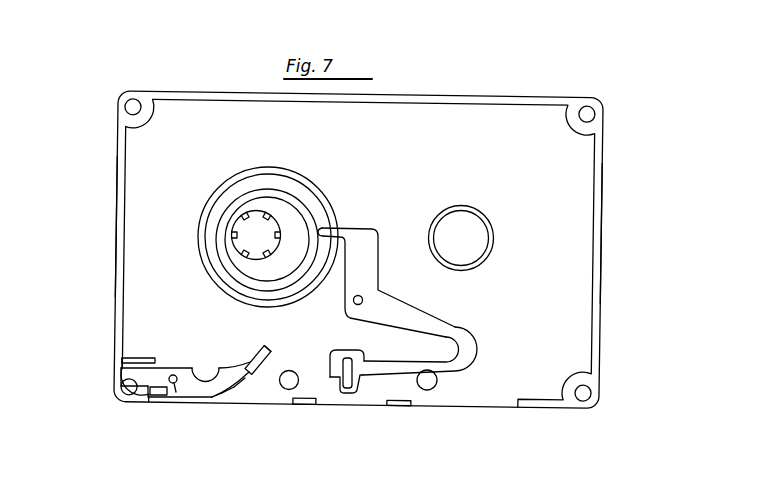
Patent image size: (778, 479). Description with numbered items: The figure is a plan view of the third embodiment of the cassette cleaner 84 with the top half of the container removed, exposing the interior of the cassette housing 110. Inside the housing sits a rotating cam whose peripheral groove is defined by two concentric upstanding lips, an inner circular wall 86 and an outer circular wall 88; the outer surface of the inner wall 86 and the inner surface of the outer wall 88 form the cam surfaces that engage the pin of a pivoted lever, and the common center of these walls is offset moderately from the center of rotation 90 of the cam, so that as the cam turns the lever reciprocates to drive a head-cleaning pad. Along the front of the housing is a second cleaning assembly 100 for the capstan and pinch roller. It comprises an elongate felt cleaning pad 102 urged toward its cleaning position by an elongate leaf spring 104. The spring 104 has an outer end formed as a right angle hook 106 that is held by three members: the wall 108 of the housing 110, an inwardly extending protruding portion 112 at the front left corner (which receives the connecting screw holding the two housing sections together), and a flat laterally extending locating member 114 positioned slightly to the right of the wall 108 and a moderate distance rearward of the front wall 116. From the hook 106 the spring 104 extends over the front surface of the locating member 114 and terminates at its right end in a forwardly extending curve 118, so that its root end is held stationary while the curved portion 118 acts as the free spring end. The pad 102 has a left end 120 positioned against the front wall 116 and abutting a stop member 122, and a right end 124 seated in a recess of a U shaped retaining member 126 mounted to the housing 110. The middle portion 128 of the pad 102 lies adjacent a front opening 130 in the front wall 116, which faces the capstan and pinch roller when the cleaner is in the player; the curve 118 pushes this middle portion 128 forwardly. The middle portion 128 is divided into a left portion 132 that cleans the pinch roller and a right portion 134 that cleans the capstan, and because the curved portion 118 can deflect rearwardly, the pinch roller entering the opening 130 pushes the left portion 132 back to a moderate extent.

The third embodiment (cassette cleaner) 84 is at (446, 90).
The left wall 108 is at (117, 195).
The cassette housing 110 is at (563, 207).
The protruding portion 112 is at (117, 386).
The front opening 130 is at (284, 404).
The outer circular wall 88 is at (295, 175).
The inner circular wall 86 is at (263, 187).
The center of rotation 90 is at (257, 237).
The second cleaning assembly 100 is at (218, 395).
The leaf spring 104 is at (188, 366).
The curve (curved spring portion) 118 is at (207, 374).
The felt cleaning pad 102 is at (238, 360).
The U shaped retaining member 126 is at (272, 350).
The right end (of pad) 124 is at (270, 362).
The left end (of pad) 120 is at (192, 395).
The stop member 122 is at (173, 398).
The front wall 116 is at (172, 402).
The left portion (of pad middle) 132 is at (217, 395).
The middle portion (of pad) 128 is at (220, 398).
The right portion (of pad middle) 134 is at (260, 396).
The locating member 114 is at (125, 356).
The right angle hook 106 is at (120, 356).